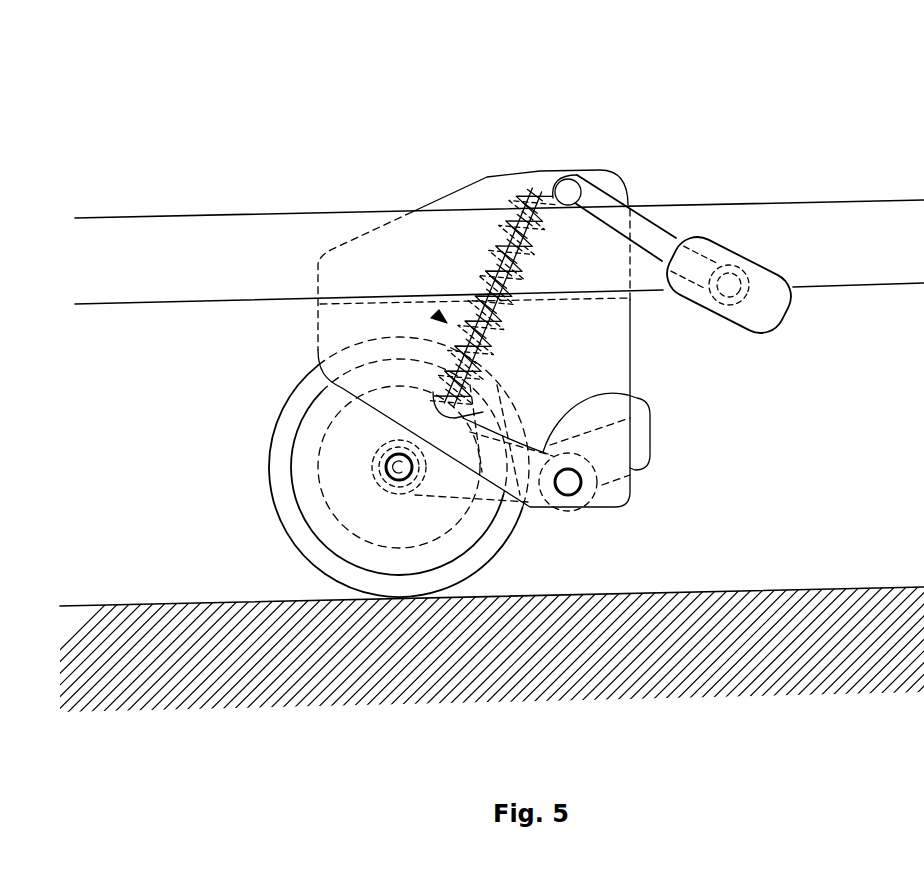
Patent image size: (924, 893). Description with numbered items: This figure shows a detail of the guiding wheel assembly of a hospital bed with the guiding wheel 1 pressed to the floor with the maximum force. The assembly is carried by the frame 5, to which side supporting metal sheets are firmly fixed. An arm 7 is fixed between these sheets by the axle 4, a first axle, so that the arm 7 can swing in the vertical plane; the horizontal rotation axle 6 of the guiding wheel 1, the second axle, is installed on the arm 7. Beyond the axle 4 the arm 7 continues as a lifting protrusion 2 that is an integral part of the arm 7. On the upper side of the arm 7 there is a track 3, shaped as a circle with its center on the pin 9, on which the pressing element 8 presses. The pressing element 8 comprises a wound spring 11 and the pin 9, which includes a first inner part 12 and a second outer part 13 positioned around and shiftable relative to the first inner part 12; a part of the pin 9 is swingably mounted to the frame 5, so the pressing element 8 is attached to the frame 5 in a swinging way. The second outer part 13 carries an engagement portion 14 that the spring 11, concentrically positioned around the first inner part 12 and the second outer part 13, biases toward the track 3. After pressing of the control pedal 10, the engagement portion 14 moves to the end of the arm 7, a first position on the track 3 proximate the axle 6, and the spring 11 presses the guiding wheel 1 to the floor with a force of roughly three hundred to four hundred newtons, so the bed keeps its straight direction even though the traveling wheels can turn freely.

The guiding wheel 1 is at (283, 460).
The lifting protrusion 2 is at (640, 435).
The track 3 is at (610, 392).
The axle 4 is at (567, 482).
The frame 5 is at (202, 273).
The horizontal rotation axle 6 is at (386, 468).
The arm 7 is at (447, 472).
The pressing element 8 is at (443, 320).
The pin 9 is at (570, 188).
The control pedal 10 is at (748, 270).
The wound spring 11 is at (518, 276).
The first inner part 12 is at (543, 227).
The second outer part 13 is at (508, 335).
The engagement portion 14 is at (487, 410).